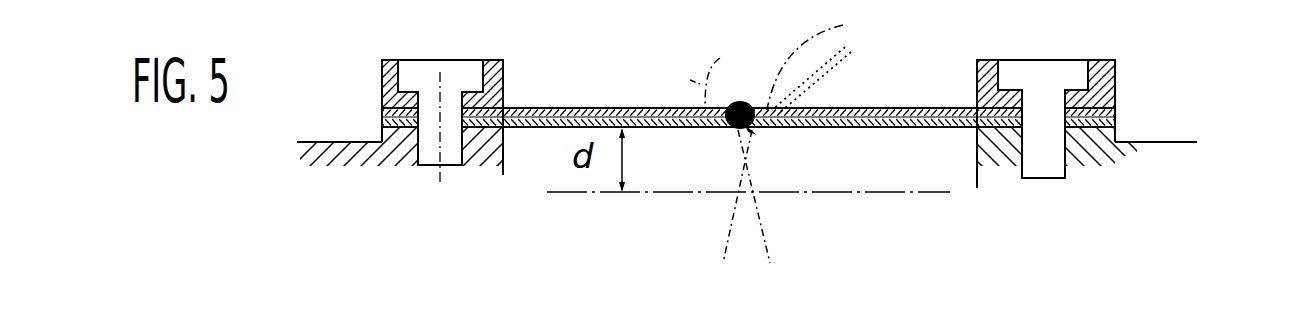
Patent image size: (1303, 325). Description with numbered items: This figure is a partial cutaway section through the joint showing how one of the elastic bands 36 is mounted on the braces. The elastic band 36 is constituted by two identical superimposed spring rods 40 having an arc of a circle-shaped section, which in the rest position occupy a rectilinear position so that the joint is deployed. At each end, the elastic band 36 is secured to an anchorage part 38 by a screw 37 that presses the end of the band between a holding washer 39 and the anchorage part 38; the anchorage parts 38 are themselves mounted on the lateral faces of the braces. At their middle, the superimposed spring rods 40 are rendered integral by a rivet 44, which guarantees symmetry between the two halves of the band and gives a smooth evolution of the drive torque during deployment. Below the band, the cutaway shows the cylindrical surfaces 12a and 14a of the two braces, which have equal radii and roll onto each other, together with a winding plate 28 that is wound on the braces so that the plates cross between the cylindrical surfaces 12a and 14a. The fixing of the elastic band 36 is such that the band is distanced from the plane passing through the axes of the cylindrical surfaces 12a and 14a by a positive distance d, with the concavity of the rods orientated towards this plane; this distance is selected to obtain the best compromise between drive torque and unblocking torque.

The elastic band 36 is at (597, 109).
The screw 37 is at (466, 70).
The anchorage part 38 is at (332, 152).
The holding washer 39 is at (381, 72).
The spring rod 40 is at (897, 108).
The rivet 44 is at (735, 128).
The cylindrical surface 12a is at (722, 144).
The winding plate 28 is at (826, 55).
The cylindrical surface 14a is at (808, 63).